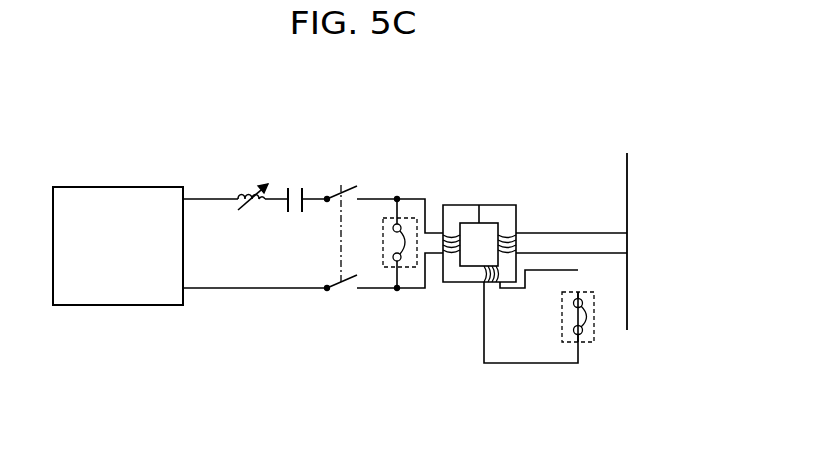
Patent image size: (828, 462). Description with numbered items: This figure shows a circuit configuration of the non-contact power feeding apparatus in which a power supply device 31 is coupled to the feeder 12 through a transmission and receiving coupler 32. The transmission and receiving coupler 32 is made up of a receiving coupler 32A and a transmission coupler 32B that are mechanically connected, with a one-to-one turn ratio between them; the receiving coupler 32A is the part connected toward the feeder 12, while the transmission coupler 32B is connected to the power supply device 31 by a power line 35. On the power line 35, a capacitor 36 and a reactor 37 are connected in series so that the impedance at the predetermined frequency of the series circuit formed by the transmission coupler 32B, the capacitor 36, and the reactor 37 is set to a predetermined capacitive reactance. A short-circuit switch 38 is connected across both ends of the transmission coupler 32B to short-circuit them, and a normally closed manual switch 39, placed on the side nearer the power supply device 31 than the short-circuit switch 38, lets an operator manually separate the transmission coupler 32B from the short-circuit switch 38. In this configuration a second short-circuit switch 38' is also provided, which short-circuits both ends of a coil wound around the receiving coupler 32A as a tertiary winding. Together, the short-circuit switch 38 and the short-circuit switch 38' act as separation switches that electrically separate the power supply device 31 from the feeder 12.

The power supply device 31 is at (133, 187).
The reactor 37 is at (253, 190).
The capacitor 36 is at (295, 186).
The power line 35 is at (313, 213).
The manual switch 39 is at (340, 183).
The short-circuit switch 38 is at (401, 198).
The transmission and receiving coupler 32 is at (505, 239).
The receiving coupler 32A is at (507, 208).
The transmission coupler 32B is at (462, 275).
The short-circuit switch 38' is at (593, 299).
The feeder 12 is at (628, 173).